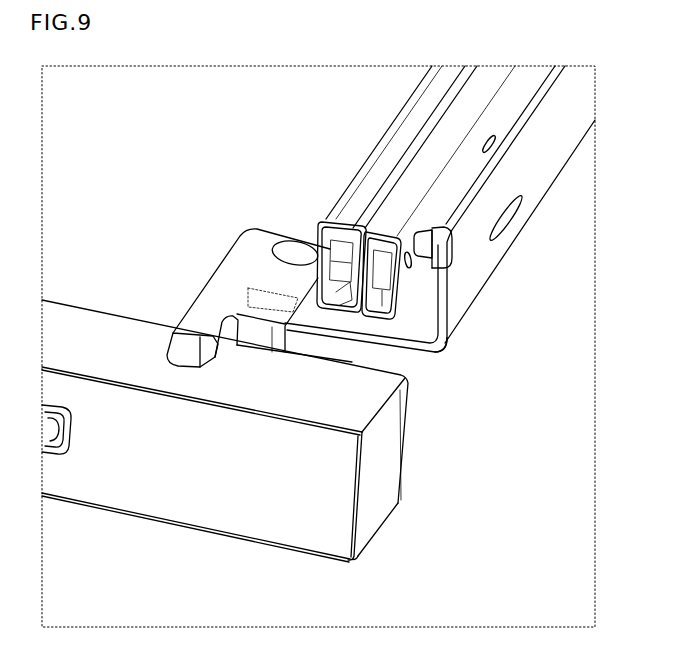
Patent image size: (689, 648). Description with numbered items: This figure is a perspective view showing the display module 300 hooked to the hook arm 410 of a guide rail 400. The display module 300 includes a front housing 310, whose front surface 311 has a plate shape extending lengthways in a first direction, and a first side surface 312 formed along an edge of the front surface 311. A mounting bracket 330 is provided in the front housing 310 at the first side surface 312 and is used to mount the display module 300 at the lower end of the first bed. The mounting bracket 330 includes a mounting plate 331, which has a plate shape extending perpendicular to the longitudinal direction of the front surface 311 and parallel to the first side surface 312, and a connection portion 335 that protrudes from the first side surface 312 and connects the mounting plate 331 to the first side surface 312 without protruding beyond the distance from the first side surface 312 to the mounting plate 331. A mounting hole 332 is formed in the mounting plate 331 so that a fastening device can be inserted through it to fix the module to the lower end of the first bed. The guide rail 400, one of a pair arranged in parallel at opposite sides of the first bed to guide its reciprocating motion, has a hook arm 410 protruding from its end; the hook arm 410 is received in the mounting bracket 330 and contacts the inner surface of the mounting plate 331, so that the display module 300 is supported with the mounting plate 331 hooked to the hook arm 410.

The display module 300 is at (97, 307).
The front housing 310 is at (124, 517).
The front surface 311 is at (217, 505).
The first side surface 312 is at (410, 437).
The mounting bracket 330 is at (270, 229).
The mounting plate 331 is at (243, 273).
The mounting hole 332 is at (296, 250).
The connection portion 335 is at (195, 310).
The guide rail 400 is at (498, 271).
The hook arm 410 is at (410, 355).